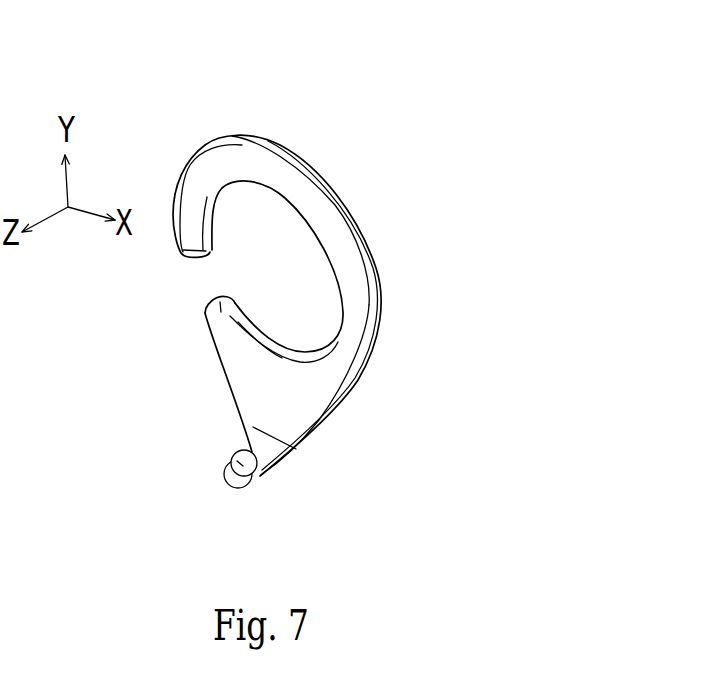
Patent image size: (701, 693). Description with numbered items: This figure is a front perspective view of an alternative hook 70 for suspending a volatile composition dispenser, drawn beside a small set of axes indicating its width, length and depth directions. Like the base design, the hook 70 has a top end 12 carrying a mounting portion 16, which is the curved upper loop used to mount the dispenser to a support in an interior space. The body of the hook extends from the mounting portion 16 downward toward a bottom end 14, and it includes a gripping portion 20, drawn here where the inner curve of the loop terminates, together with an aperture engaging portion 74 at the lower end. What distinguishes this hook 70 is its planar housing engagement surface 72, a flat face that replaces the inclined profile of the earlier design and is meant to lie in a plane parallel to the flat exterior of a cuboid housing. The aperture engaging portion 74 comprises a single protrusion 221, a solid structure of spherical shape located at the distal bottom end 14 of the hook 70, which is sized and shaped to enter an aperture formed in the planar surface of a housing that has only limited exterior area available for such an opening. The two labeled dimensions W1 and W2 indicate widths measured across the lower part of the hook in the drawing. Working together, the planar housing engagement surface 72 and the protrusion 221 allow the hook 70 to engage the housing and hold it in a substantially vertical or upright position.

The hook 70 is at (377, 147).
The top end 12 is at (237, 135).
The mounting portion 16 is at (353, 287).
The gripping portion 20 is at (245, 355).
The planar housing engagement surface 72 is at (253, 400).
The first width W1 is at (222, 378).
The second width W2 is at (230, 457).
The aperture engaging portion 74 is at (450, 487).
The protrusion 221 is at (232, 460).
The bottom end 14 is at (237, 486).